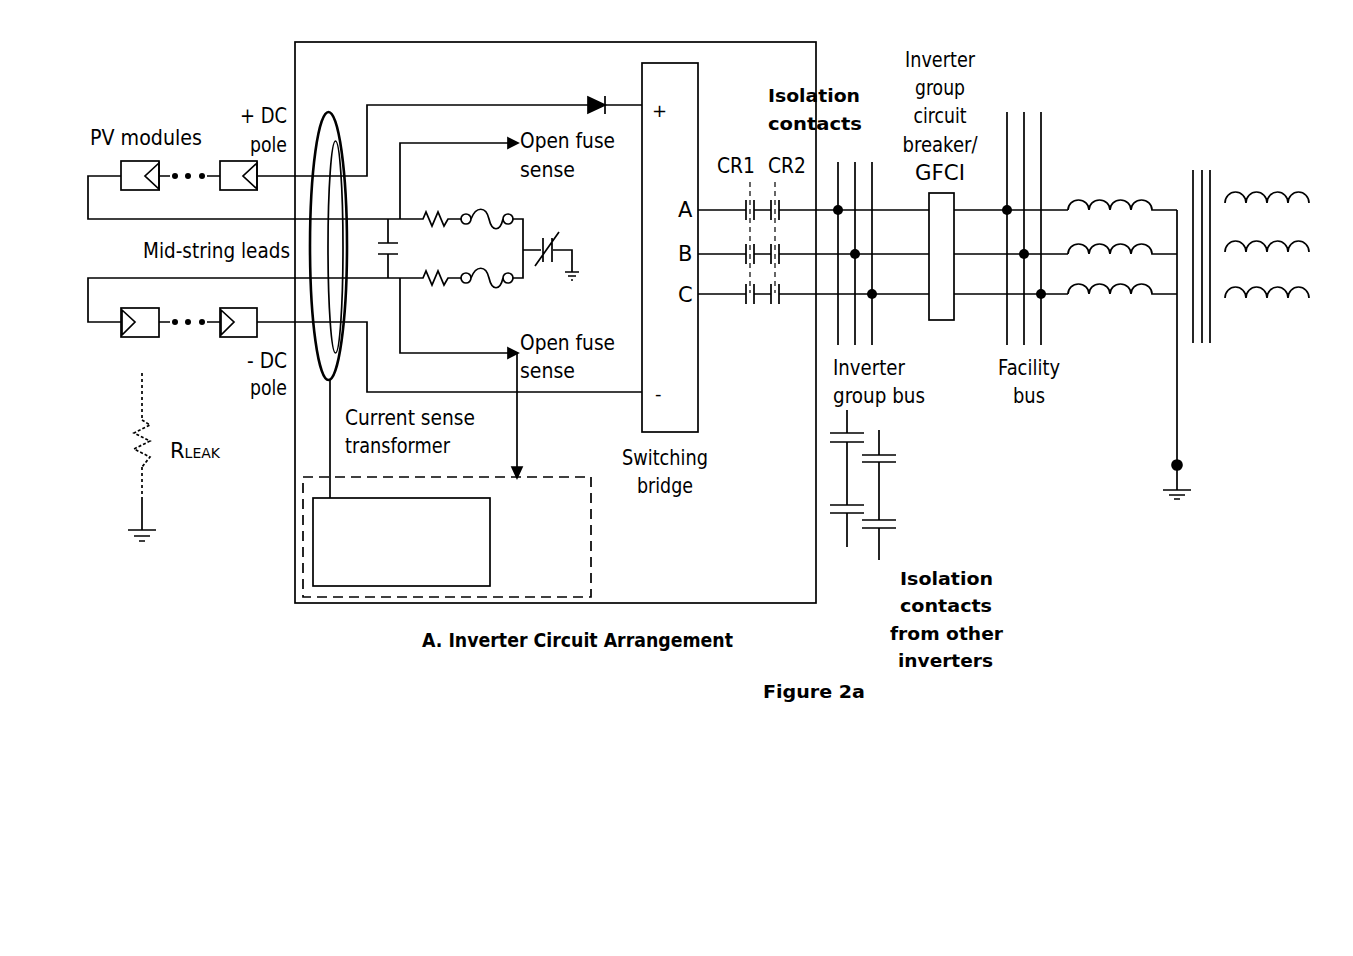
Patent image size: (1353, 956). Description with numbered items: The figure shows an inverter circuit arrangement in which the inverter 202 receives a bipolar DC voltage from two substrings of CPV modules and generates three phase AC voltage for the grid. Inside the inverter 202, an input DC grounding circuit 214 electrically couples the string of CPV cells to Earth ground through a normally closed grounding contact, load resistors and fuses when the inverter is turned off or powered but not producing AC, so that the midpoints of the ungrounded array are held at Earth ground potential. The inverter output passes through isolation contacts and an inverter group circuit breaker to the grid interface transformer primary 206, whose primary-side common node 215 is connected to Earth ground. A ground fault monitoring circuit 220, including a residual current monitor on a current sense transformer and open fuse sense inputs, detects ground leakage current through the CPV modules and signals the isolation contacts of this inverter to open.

The inverter 202 is at (555, 322).
The input DC grounding circuit 214 is at (479, 234).
The ground fault monitoring circuit 220 is at (447, 537).
The grid interface transformer primary 206 is at (1188, 223).
The primary-side common node 215 is at (1081, 363).